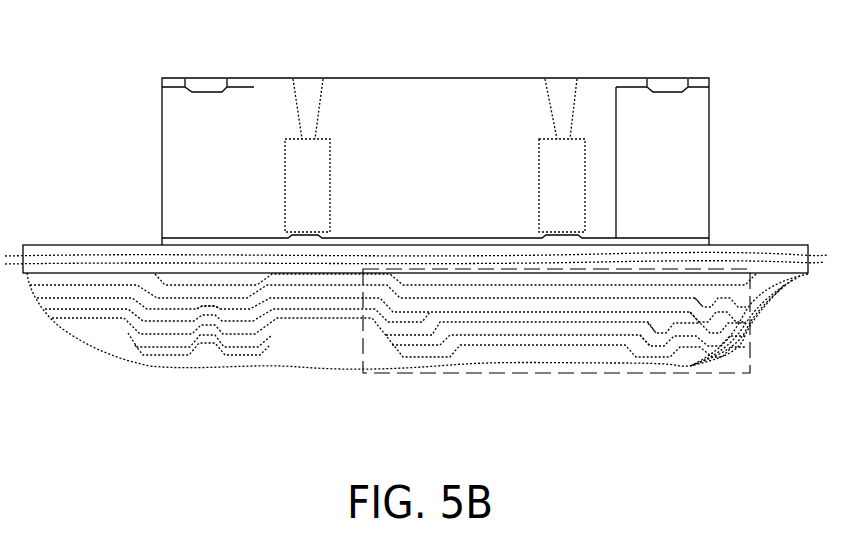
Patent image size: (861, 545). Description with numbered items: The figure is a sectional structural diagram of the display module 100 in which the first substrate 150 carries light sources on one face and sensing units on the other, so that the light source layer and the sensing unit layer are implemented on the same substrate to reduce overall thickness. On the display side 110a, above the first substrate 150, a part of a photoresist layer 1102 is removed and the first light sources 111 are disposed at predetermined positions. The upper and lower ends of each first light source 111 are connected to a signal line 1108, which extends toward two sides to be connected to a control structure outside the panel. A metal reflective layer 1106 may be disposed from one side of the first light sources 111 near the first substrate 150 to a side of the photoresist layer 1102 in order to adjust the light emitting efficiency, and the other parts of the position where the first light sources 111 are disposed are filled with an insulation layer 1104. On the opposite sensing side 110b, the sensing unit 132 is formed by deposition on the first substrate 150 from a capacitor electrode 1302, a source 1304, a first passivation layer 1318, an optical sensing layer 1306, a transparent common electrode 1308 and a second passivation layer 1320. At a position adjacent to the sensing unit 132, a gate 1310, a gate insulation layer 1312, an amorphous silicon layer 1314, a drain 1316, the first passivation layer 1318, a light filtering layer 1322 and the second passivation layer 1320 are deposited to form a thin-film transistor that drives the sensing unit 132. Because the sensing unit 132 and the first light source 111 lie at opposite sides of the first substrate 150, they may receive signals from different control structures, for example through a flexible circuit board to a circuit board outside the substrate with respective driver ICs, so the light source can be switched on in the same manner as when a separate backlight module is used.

The display module 100 is at (136, 45).
The display side 110a is at (724, 150).
The sensing side 110b is at (741, 390).
The first light source 111 is at (540, 156).
The photoresist layer 1102 is at (177, 122).
The insulation layer 1104 is at (365, 147).
The metal reflective layer 1106 is at (613, 86).
The signal line 1108 is at (702, 76).
The first substrate 150 is at (725, 247).
The sensing unit 132 is at (548, 375).
The capacitor electrode 1302 is at (518, 283).
The source 1304 is at (485, 305).
The optical sensing layer 1306 is at (650, 318).
The transparent common electrode 1308 is at (622, 330).
The gate 1310 is at (250, 281).
The gate insulation layer 1312 is at (62, 279).
The amorphous silicon layer 1314 is at (230, 303).
The drain 1316 is at (90, 293).
The first passivation layer 1318 is at (110, 303).
The second passivation layer 1320 is at (150, 327).
The light filtering layer 1322 is at (188, 348).